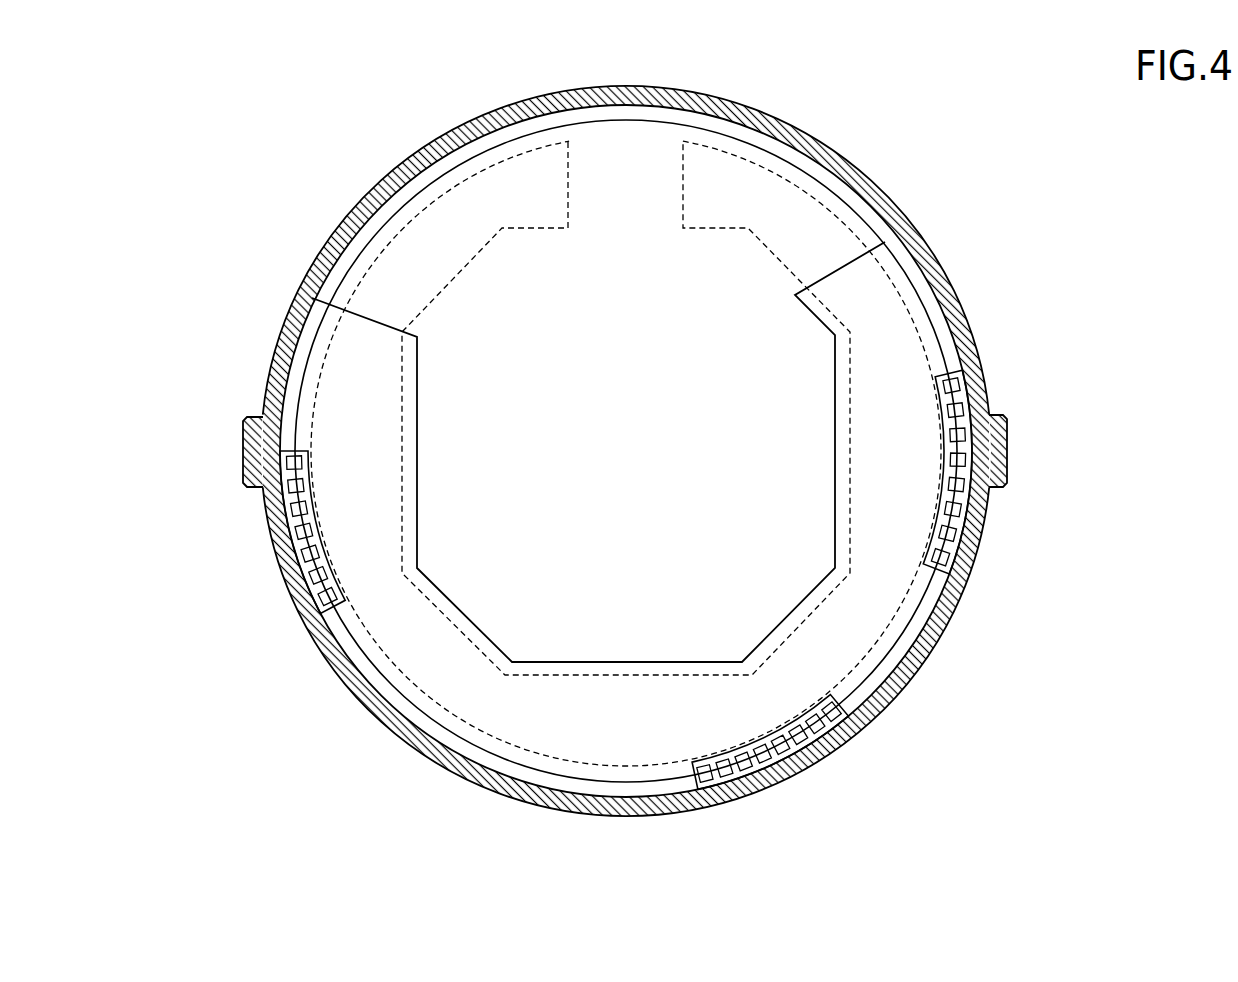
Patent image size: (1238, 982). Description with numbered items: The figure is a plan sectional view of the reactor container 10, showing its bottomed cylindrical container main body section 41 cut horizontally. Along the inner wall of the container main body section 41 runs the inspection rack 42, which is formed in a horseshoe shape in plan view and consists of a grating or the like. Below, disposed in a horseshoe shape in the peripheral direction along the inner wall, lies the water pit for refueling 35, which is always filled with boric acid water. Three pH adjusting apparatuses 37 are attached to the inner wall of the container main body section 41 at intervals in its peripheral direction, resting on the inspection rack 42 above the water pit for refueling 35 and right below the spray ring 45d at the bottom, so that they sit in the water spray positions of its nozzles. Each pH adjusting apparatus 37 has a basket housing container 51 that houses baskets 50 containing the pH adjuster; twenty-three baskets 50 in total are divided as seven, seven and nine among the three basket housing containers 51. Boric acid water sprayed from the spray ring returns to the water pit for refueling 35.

The reactor container 10 is at (852, 160).
The container main body section 41 is at (926, 256).
The spray ring 45d is at (928, 643).
The water pit for refueling 35 is at (535, 229).
The inspection rack 42 is at (462, 419).
The pH adjusting apparatus 37 is at (619, 576).
The basket housing container 51 is at (318, 575).
The basket 50 is at (248, 625).